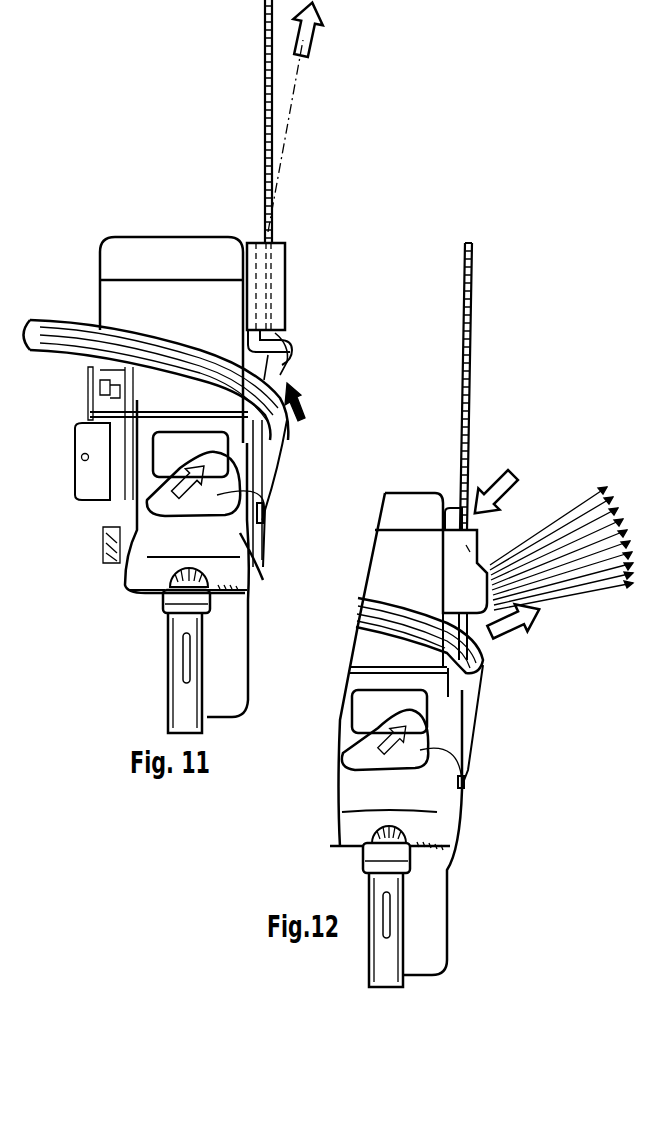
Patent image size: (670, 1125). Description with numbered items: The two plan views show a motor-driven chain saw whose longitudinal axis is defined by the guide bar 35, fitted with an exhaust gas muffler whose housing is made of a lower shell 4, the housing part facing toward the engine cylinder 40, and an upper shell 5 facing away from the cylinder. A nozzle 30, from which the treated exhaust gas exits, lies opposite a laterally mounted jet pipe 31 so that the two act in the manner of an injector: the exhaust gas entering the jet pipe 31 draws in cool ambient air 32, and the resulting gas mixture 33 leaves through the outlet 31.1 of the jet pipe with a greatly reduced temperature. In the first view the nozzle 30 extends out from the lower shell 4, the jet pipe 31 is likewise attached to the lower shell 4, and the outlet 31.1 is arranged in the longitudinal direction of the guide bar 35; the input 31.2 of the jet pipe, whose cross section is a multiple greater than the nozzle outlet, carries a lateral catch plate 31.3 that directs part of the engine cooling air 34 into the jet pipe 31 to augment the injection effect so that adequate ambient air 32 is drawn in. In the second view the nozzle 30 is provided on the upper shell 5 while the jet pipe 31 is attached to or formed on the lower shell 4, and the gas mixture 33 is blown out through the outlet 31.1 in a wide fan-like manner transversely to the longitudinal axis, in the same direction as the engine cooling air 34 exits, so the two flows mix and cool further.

In FIG. 11, the lower shell 4 is at (187, 330).
In FIG. 12, the lower shell 4 is at (414, 577).
In FIG. 11, the upper shell 5 is at (184, 273).
In FIG. 12, the upper shell 5 is at (414, 523).
In FIG. 11, the nozzle 30 is at (288, 364).
In FIG. 12, the nozzle 30 is at (452, 508).
In FIG. 11, the jet pipe 31 is at (283, 296).
In FIG. 12, the jet pipe 31 is at (470, 548).
In FIG. 11, the outlet of the jet pipe 31.1 is at (279, 240).
In FIG. 12, the outlet of the jet pipe 31.1 is at (505, 590).
In FIG. 11, the inlet cross section of the jet pipe 31.2 is at (275, 340).
In FIG. 11, the lateral catch plate 31.3 is at (294, 355).
In FIG. 11, the ambient air 32 is at (300, 420).
In FIG. 12, the ambient air 32 is at (518, 475).
In FIG. 11, the gas mixture 33 is at (318, 44).
In FIG. 12, the gas mixture 33 is at (610, 588).
In FIG. 11, the engine cooling air 34 is at (285, 386).
In FIG. 12, the engine cooling air 34 is at (505, 637).
In FIG. 11, the guide bar 35 is at (264, 28).
In FIG. 12, the guide bar 35 is at (473, 297).
In FIG. 11, the engine cylinder 40 is at (262, 524).
In FIG. 12, the engine cylinder 40 is at (465, 780).